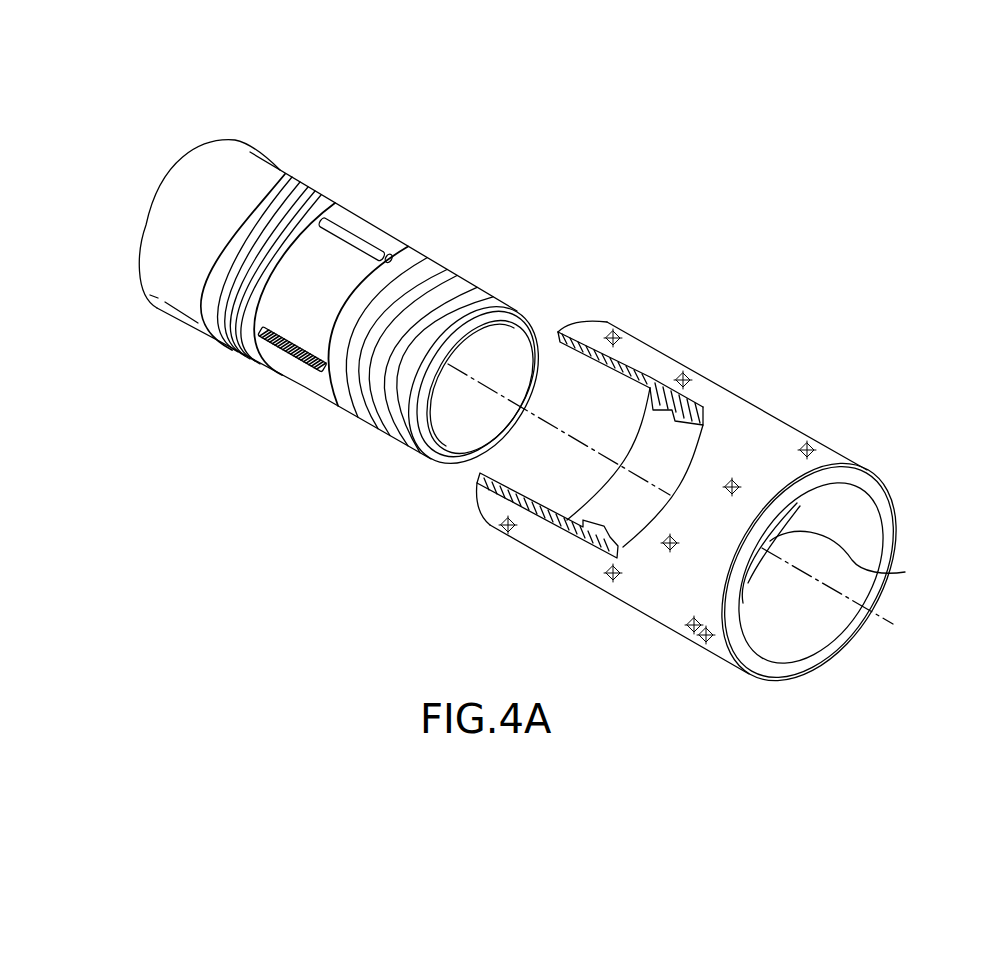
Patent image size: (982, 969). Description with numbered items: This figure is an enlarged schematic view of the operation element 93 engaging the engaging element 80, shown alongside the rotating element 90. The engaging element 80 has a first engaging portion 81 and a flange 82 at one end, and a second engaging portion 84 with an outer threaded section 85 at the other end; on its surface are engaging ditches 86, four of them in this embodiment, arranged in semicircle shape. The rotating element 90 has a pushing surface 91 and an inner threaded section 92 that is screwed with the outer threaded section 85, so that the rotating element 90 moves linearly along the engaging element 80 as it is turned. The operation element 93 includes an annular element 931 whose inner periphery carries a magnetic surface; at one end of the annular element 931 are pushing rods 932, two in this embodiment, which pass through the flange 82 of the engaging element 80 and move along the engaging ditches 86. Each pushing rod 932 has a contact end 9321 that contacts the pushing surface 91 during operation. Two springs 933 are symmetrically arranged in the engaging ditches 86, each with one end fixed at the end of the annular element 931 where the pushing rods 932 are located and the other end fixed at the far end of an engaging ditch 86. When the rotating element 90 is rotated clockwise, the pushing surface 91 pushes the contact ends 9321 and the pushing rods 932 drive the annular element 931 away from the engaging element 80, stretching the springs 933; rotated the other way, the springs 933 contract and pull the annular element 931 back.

The engaging element 80 is at (443, 247).
The first engaging portion 81 is at (280, 217).
The flange 82 is at (310, 217).
The second engaging portion 84 is at (492, 303).
The outer threaded section 85 is at (460, 287).
The engaging ditches 86 is at (378, 242).
The rotating element 90 is at (783, 437).
The pushing surface 91 is at (650, 377).
The inner threaded section 92 is at (703, 420).
The operation element 93 is at (165, 178).
The annular element 931 is at (215, 167).
The pushing rod 932 is at (345, 233).
The contact end 9321 is at (397, 262).
The spring 933 is at (295, 357).